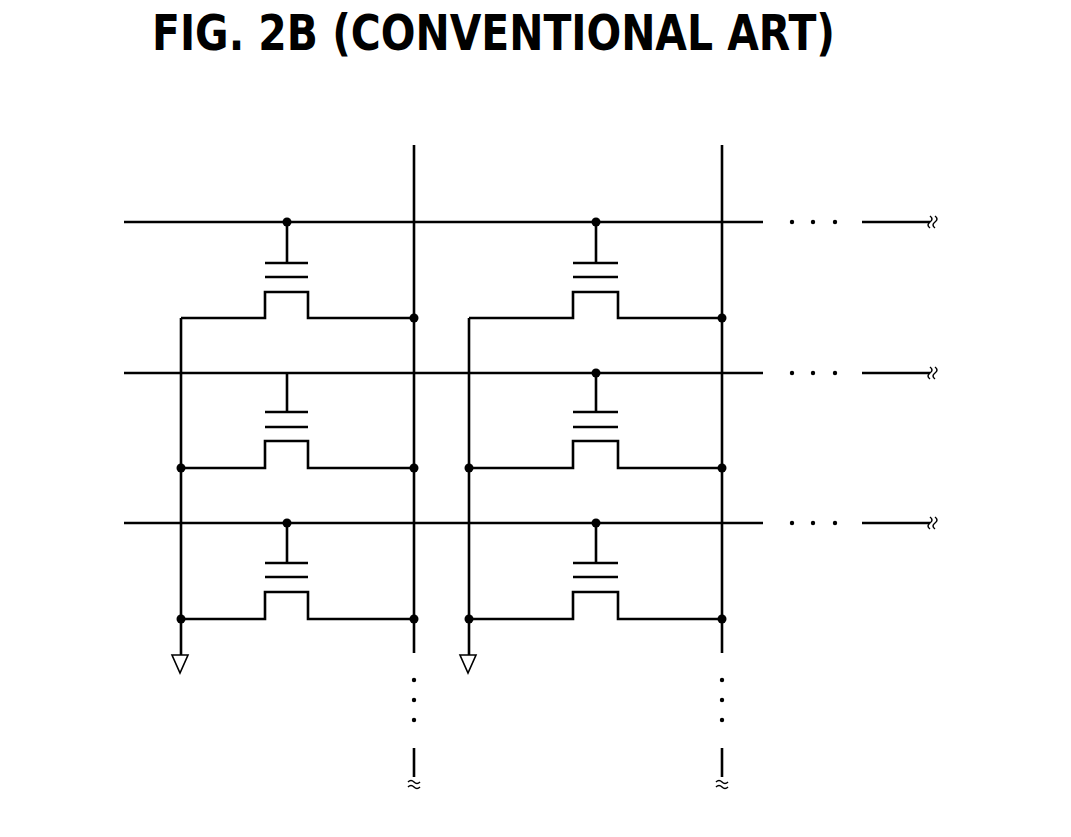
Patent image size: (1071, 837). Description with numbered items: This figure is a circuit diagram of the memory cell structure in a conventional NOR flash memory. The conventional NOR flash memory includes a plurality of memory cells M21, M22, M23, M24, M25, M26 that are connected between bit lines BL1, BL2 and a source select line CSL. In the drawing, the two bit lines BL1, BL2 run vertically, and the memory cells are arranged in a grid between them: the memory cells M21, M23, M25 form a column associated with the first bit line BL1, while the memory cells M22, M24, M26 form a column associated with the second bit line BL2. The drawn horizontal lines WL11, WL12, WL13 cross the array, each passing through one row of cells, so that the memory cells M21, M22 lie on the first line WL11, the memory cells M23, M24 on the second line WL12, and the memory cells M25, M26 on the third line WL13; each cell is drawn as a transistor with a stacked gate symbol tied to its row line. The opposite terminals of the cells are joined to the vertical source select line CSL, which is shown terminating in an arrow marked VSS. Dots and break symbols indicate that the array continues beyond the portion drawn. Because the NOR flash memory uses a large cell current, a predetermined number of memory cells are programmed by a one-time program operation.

The memory cell M21 is at (308, 304).
The memory cell M22 is at (618, 304).
The memory cell M23 is at (308, 453).
The memory cell M24 is at (618, 453).
The memory cell M25 is at (308, 605).
The memory cell M26 is at (618, 605).
The bit line BL1 is at (414, 168).
The bit line BL2 is at (722, 166).
The word line WL11 is at (487, 221).
The word line WL12 is at (487, 371).
The word line WL13 is at (487, 521).
The source select line CSL is at (181, 585).
The ground voltage VSS is at (322, 682).